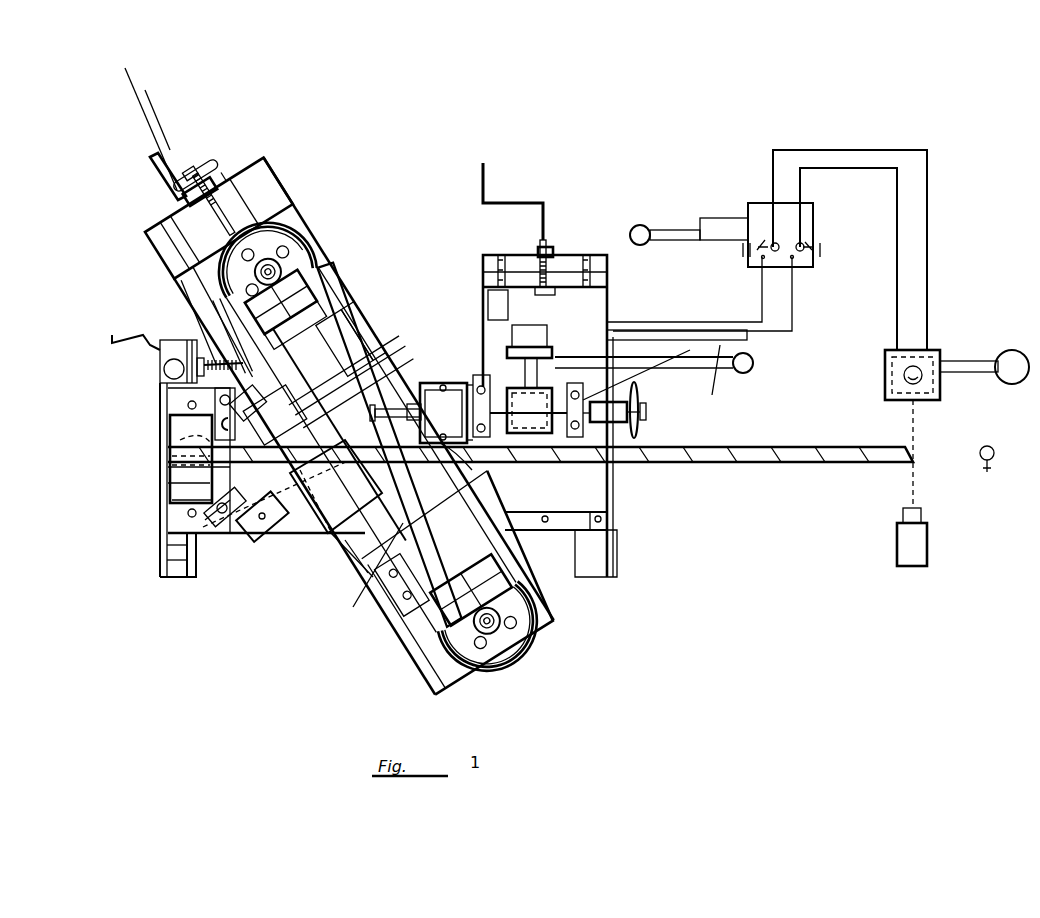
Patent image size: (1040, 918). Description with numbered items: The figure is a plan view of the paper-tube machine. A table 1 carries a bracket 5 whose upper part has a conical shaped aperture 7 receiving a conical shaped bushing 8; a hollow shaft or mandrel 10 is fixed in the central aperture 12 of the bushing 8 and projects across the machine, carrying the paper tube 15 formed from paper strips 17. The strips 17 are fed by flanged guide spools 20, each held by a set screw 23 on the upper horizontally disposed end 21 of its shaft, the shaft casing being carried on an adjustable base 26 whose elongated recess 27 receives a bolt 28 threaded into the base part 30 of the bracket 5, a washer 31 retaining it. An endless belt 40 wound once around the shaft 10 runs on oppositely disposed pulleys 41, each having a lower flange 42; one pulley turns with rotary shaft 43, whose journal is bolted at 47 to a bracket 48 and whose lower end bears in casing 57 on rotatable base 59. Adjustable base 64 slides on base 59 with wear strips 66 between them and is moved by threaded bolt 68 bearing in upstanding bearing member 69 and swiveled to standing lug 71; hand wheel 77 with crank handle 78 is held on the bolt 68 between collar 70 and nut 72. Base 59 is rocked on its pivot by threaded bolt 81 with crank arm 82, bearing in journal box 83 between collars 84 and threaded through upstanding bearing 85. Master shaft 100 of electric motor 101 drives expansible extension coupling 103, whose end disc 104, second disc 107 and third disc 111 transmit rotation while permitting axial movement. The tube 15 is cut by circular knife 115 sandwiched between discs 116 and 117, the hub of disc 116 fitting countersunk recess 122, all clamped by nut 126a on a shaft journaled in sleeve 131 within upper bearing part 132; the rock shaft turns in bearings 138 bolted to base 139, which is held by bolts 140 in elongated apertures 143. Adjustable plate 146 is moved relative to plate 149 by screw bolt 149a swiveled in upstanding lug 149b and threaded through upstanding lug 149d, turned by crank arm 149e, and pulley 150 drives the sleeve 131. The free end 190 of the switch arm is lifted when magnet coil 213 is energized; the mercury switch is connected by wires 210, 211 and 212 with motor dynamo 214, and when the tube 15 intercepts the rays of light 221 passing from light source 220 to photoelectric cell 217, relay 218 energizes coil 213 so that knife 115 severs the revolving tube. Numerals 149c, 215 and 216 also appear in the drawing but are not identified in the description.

The table 1 is at (298, 535).
The bracket 5 is at (180, 483).
The conical shaped aperture 7 is at (168, 467).
The conical shaped bushing 8 is at (172, 440).
The hollow shaft or mandrel 10 is at (265, 440).
The central aperture 12 is at (182, 428).
The paper tube 15 is at (797, 463).
The paper strips 17 is at (332, 492).
The flanged guide spools 20 is at (212, 398).
The upper horizontally disposed end 21 is at (278, 540).
The set screw 23 is at (245, 540).
The adjustable base 26 is at (175, 560).
The elongated recess 27 is at (178, 540).
The bolt 28 is at (182, 548).
The base part 30 is at (180, 520).
The washer 31 is at (180, 500).
The endless belt 40 is at (400, 545).
The pulleys 41 is at (290, 236).
The lower flange 42 is at (487, 660).
The rotary shaft 43 is at (520, 660).
The bolts 47 is at (312, 272).
The brackets 48 is at (298, 250).
The casing 57 is at (190, 300).
The rotatable base 59 is at (435, 675).
The adjustable base 64 is at (272, 222).
The wear strips 66 is at (255, 196).
The threaded bolt 68 is at (222, 200).
The upstanding bearing member 69 is at (218, 172).
The collar 70 is at (185, 192).
The standing lug 71 is at (258, 176).
The nut 72 is at (190, 170).
The hand wheel 77 is at (163, 130).
The crank handle 78 is at (142, 115).
The threaded bolt 81 is at (195, 362).
The crank arm 82 is at (165, 365).
The journal box 83 is at (112, 335).
The collars 84 is at (180, 390).
The upstanding bearing 85 is at (205, 340).
The master shaft 100 is at (400, 560).
The electric motor 101 is at (345, 545).
The expansible extension coupling 103 is at (320, 318).
The end disc 104 is at (356, 389).
The second disc 107 is at (372, 404).
The third disc 111 is at (345, 310).
The circular knife 115 is at (646, 369).
The disc 116 is at (612, 400).
The disc 117 is at (646, 408).
The countersunk recess 122 is at (600, 400).
The nut 126a is at (656, 410).
The sleeve 131 is at (414, 404).
The upper bearing part 132 is at (445, 382).
The bearings 138 is at (482, 374).
The base 139 is at (555, 358).
The bolts 140 is at (485, 462).
The elongated apertures 143 is at (540, 462).
The adjustable plate 146 is at (492, 297).
The plate 149 is at (500, 262).
The screw bolt 149a is at (540, 252).
The upstanding lug 149b is at (495, 278).
The screw 149c is at (556, 292).
The upstanding lug 149d is at (538, 248).
The crank arm 149e is at (480, 168).
The pulley 150 is at (470, 384).
The free end 190 is at (530, 345).
The wire 210 is at (712, 365).
The wire 211 is at (705, 377).
The wire 212 is at (528, 410).
The magnet coil 213 is at (528, 345).
The motor dynamo 214 is at (755, 358).
The wire 215 is at (927, 240).
The wire 216 is at (897, 294).
The photoelectric cell 217 is at (935, 350).
The relay 218 is at (813, 222).
The light source 220 is at (925, 528).
The rays of light 221 is at (915, 418).